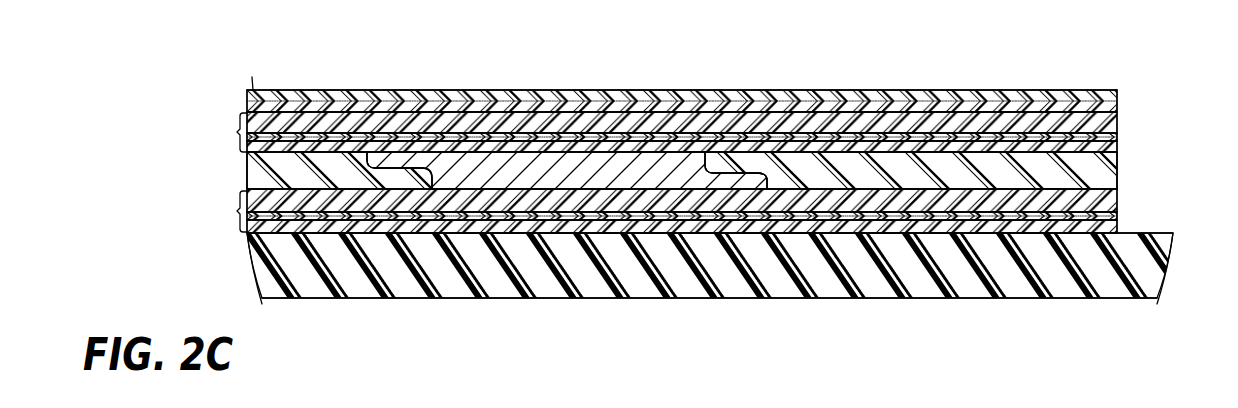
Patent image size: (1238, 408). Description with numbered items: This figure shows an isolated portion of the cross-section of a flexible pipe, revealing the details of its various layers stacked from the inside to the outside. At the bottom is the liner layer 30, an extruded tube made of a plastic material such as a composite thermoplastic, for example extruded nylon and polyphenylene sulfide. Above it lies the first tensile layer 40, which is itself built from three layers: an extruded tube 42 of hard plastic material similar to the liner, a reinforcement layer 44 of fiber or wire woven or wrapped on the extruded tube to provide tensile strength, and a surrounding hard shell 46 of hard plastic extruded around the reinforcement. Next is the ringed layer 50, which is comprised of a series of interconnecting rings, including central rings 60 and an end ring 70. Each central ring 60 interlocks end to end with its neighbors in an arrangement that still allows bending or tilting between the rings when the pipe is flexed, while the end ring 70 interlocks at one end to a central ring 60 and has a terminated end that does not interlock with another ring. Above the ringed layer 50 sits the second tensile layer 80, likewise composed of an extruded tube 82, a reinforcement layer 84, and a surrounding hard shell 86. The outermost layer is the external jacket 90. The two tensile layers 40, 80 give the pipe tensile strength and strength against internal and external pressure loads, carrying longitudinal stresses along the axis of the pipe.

The liner layer 30 is at (263, 275).
The first tensile layer 40 is at (688, 196).
The extruded tube 42 is at (1118, 230).
The reinforcement layer 44 is at (1118, 213).
The surrounding hard shell 46 is at (1118, 197).
The ringed layer 50 is at (637, 106).
The central ring 60 is at (577, 163).
The end ring 70 is at (918, 165).
The second tensile layer 80 is at (688, 115).
The extruded tube 82 is at (1118, 149).
The reinforcement layer 84 is at (1118, 135).
The surrounding hard shell 86 is at (1118, 114).
The external jacket 90 is at (262, 102).